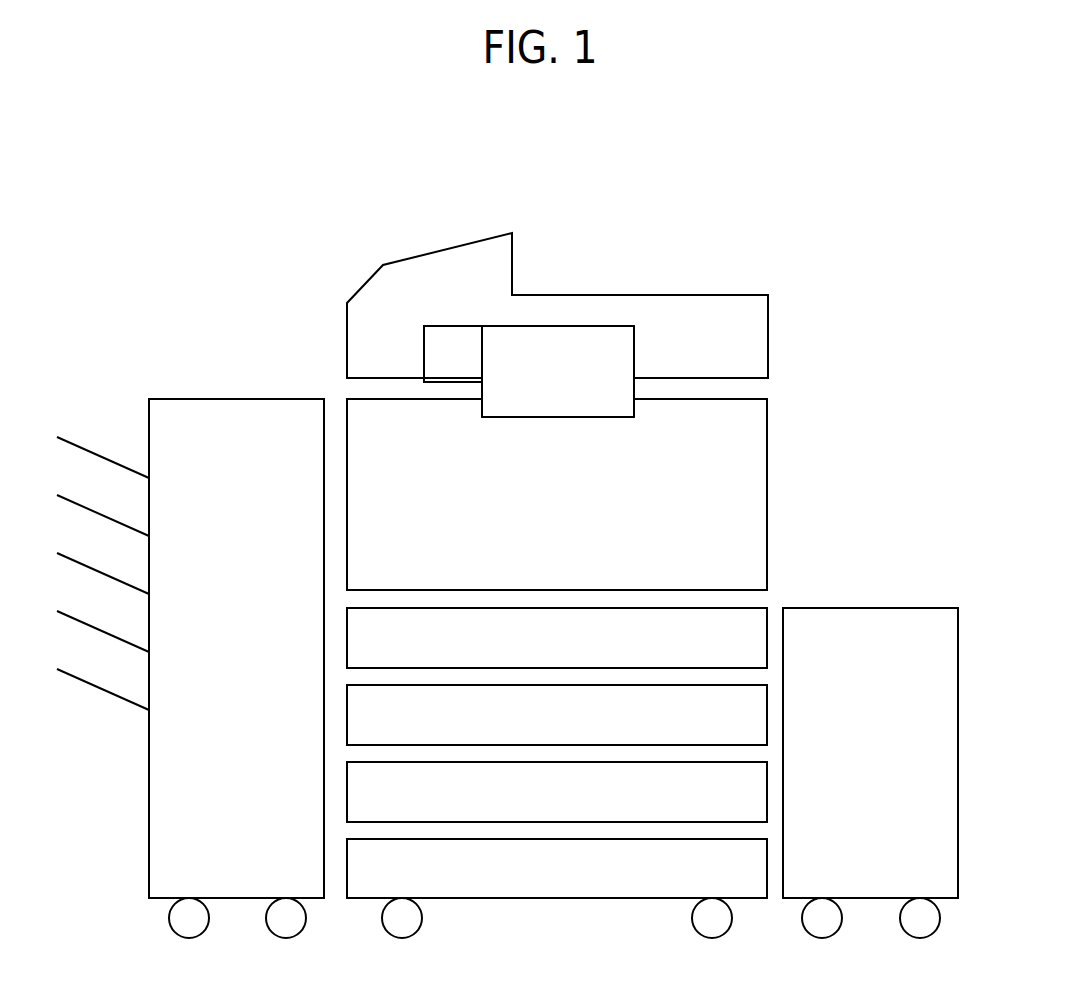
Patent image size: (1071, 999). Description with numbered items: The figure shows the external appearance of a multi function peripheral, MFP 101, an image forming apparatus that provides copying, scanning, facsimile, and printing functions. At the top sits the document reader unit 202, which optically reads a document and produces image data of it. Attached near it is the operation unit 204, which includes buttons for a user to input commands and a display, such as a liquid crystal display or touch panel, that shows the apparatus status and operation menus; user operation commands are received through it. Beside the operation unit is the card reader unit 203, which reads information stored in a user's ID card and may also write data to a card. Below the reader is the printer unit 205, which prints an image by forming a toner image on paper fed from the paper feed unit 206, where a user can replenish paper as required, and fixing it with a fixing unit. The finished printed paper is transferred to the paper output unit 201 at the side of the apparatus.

The MFP 101 is at (851, 177).
The paper output unit 201 is at (277, 399).
The document reader unit 202 is at (403, 259).
The card reader unit 203 is at (445, 326).
The operation unit 204 is at (492, 326).
The printer unit 205 is at (767, 433).
The paper feed unit 206 is at (882, 608).